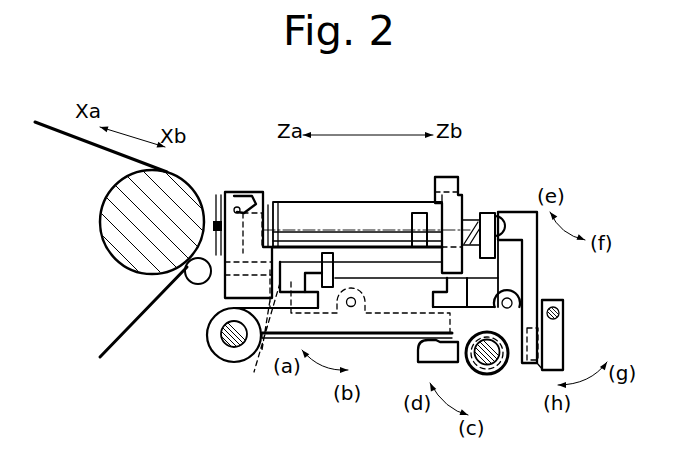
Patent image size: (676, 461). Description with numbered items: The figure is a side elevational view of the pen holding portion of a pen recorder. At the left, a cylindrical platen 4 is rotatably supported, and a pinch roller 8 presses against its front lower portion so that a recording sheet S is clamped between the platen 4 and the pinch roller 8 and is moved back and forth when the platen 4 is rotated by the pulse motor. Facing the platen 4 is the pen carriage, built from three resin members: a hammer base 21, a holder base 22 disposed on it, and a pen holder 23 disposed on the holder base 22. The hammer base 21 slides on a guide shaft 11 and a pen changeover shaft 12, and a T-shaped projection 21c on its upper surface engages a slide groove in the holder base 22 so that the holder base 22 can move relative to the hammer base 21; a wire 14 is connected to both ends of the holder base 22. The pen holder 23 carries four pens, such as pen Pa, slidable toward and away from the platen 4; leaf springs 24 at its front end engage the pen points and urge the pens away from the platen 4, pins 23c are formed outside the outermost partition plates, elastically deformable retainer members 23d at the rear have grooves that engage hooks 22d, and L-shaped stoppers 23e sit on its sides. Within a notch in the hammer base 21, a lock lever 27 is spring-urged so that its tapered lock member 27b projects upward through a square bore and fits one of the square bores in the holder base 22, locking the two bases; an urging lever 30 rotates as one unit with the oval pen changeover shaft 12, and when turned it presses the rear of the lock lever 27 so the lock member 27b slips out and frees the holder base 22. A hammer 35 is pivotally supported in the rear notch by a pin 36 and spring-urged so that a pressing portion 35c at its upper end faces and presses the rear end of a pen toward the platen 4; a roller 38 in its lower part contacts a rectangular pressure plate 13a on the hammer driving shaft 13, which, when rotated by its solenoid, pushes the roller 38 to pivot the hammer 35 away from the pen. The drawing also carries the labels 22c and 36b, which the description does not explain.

The platen 4 is at (103, 237).
The pinch roller 8 is at (185, 282).
The guide shaft 11 is at (223, 337).
The pen changeover shaft 12 is at (487, 368).
The hammer driving shaft 13 is at (560, 313).
The pressure plate 13a is at (557, 340).
The wire 14 is at (260, 220).
The hammer base 21 is at (217, 363).
The T-shaped projection 21c is at (447, 291).
The holder base 22 is at (388, 272).
The carriage hook end 22c is at (243, 208).
The hooks 22d is at (455, 218).
The pen holder 23 is at (358, 255).
The pins 23c is at (238, 206).
The retainer members 23d is at (452, 215).
The L-shaped stoppers 23e is at (328, 252).
The leaf springs 24 is at (217, 218).
The lock lever 27 is at (370, 338).
The lock member 27b is at (254, 388).
The urging lever 30 is at (466, 365).
The hammer 35 is at (535, 257).
The pressing portion 35c is at (507, 222).
The pin 36 is at (513, 303).
The block 36b is at (425, 347).
The roller 38 is at (545, 371).
The recording sheet S is at (122, 330).
The pen Pa is at (335, 215).